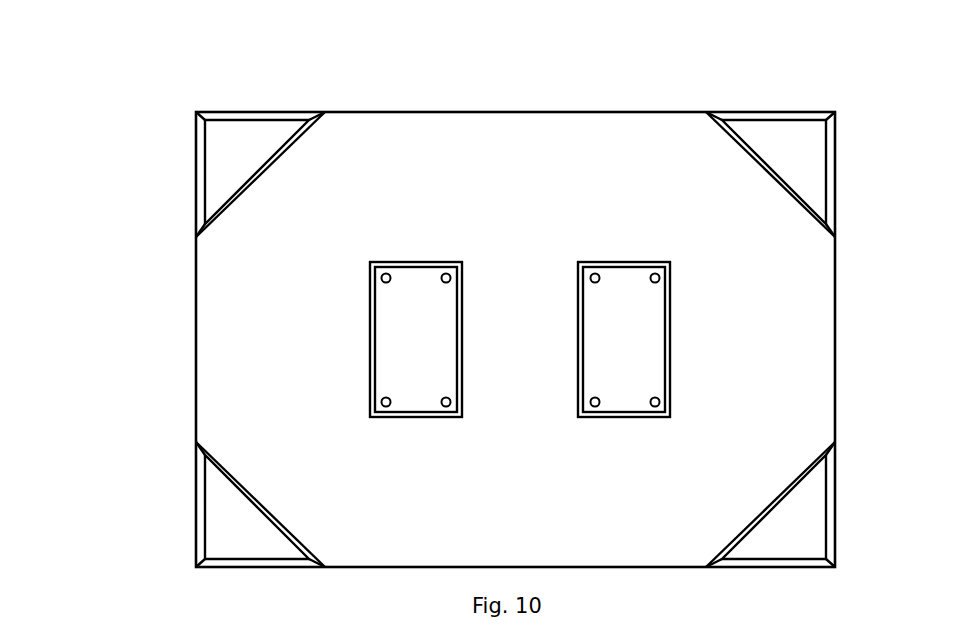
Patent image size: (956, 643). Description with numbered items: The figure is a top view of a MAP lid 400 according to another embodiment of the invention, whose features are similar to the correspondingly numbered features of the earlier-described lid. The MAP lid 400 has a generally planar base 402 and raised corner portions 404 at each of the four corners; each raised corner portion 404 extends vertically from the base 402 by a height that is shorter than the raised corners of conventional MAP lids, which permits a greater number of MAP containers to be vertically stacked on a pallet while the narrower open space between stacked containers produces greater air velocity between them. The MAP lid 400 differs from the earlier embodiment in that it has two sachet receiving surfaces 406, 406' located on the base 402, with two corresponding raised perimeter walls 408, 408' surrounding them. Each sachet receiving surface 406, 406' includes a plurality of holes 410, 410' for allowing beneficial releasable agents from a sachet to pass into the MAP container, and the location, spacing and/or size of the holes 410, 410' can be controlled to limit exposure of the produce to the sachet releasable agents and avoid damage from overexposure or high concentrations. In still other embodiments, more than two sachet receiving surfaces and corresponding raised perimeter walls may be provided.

The MAP lid 400 is at (122, 112).
The base 402 is at (547, 216).
The raised corner portions 404 is at (780, 112).
The sachet receiving surface 406 is at (416, 339).
The sachet receiving surface 406' is at (624, 339).
The raised perimeter wall 408 is at (361, 340).
The raised perimeter wall 408' is at (573, 340).
The holes 410 is at (409, 444).
The holes 410' is at (613, 443).